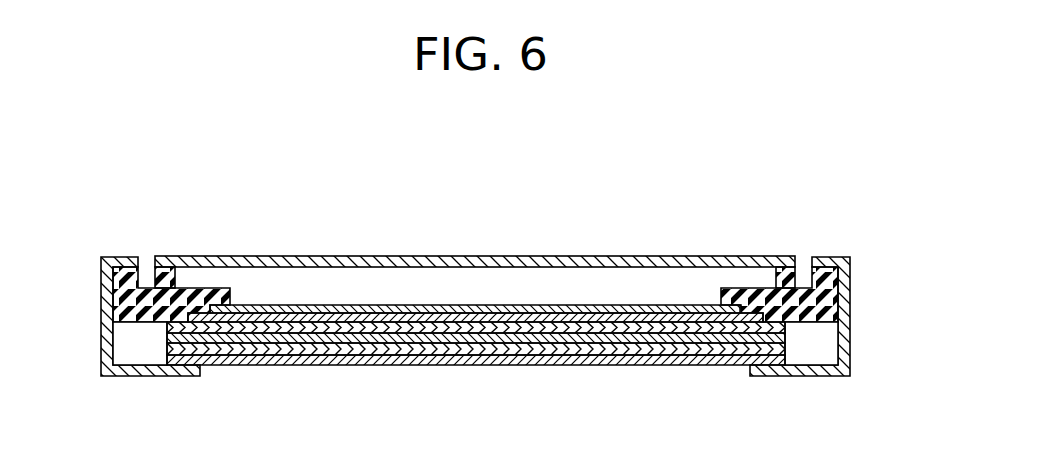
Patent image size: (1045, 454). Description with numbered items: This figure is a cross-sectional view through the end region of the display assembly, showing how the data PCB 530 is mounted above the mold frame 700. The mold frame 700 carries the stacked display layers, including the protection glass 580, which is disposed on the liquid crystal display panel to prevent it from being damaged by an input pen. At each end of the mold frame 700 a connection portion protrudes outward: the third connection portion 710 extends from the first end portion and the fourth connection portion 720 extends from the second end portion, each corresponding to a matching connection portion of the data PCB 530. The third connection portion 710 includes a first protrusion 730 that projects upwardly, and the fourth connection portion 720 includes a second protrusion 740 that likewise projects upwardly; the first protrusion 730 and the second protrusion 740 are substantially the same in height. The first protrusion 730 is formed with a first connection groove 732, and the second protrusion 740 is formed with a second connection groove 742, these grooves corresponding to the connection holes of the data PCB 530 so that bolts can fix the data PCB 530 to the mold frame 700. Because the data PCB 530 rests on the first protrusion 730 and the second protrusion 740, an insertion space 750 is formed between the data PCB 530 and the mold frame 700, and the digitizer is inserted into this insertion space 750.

The data PCB 530 is at (338, 256).
The protection glass 580 is at (338, 365).
The mold frame 700 is at (177, 365).
The third connection portion 710 is at (130, 307).
The fourth connection portion 720 is at (806, 304).
The first protrusion 730 is at (115, 274).
The first connection groove 732 is at (152, 286).
The second protrusion 740 is at (820, 280).
The second connection groove 742 is at (804, 286).
The insertion space 750 is at (494, 276).